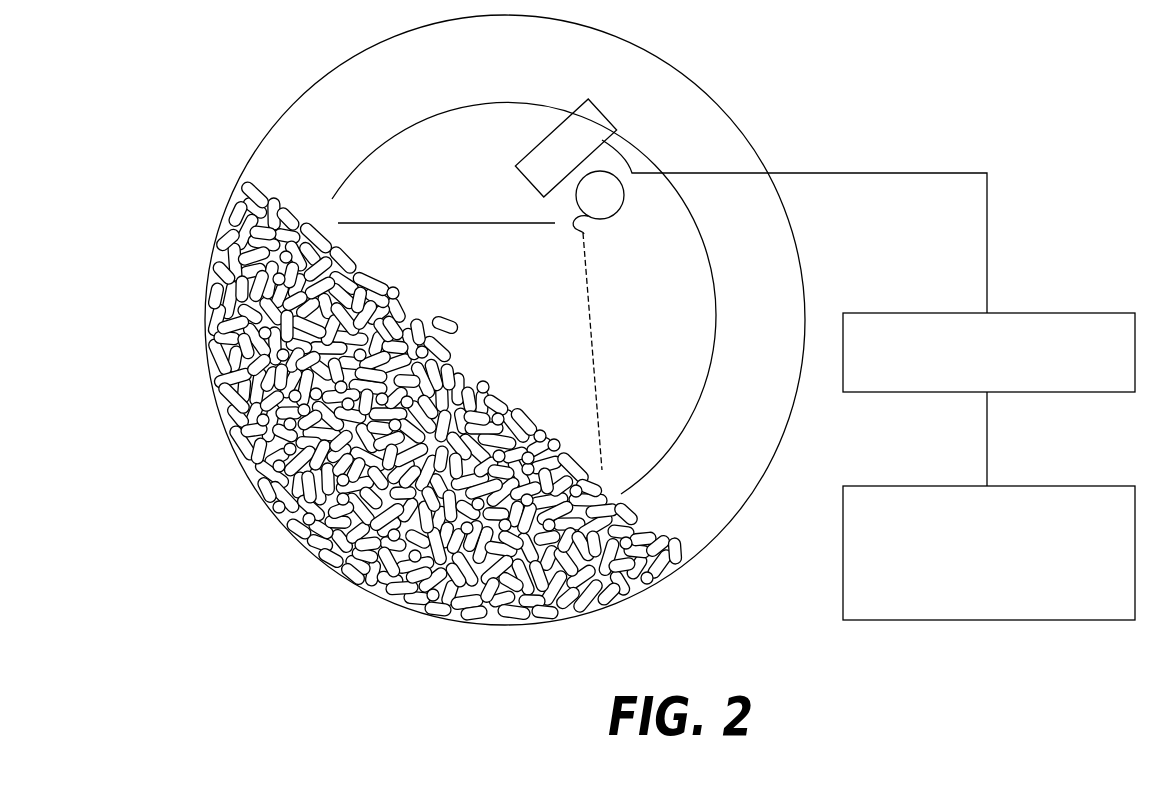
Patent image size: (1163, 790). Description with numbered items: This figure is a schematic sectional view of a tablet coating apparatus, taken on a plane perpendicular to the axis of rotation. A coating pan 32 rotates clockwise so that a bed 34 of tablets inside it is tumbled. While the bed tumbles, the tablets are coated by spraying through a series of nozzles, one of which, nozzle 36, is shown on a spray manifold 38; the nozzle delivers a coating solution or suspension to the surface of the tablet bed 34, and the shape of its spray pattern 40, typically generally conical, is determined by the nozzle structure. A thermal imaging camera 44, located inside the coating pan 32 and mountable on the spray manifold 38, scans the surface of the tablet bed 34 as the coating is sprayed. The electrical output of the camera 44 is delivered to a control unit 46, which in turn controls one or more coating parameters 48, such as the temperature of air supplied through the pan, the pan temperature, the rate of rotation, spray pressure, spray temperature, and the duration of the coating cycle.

The coating pan 32 is at (717, 533).
The bed of tablets 34 is at (660, 518).
The nozzle 36 is at (590, 217).
The spray manifold 38 is at (622, 207).
The spray pattern 40 is at (593, 380).
The thermal imaging camera 44 is at (533, 137).
The control unit 46 is at (1036, 313).
The coating parameters 48 is at (1050, 487).